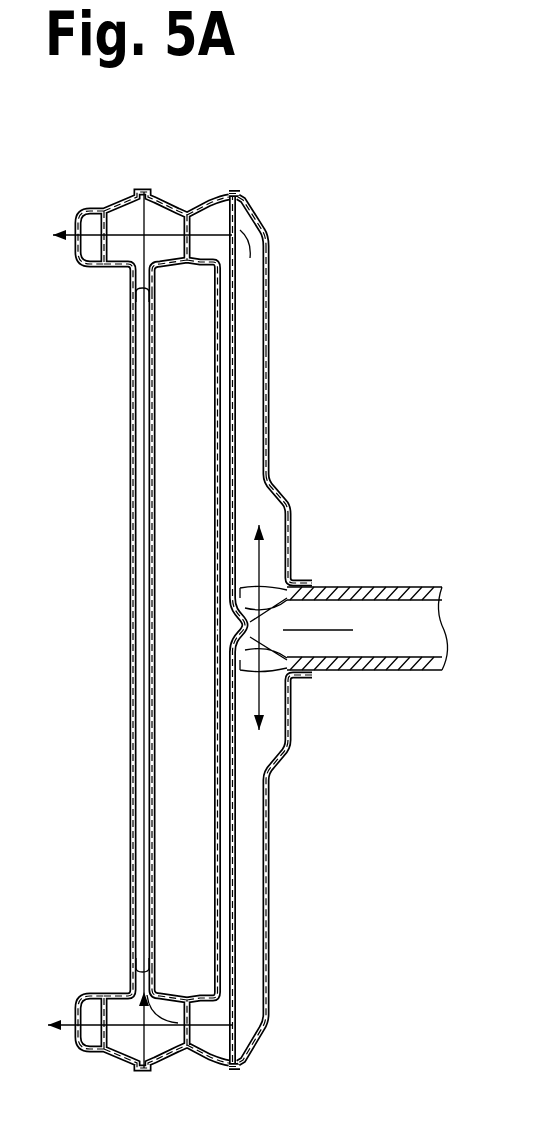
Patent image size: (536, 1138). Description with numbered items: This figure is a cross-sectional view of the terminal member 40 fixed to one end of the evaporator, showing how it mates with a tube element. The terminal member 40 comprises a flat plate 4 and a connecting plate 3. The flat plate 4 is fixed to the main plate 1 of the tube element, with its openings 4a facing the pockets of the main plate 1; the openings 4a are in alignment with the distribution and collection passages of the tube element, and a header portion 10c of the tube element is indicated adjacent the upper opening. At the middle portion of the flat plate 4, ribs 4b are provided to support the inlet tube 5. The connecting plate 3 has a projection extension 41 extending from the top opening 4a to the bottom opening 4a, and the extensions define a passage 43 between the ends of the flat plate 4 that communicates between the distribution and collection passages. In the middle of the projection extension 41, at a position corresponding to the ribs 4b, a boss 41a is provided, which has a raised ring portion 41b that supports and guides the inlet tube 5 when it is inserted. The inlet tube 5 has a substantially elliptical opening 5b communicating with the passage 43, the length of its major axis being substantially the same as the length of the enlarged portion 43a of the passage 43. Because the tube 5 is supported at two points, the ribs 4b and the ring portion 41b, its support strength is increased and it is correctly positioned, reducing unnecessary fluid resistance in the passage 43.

The main plate 1 is at (215, 318).
The header tank 10c is at (212, 190).
The connecting plate 3 is at (278, 816).
The flat plate 4 is at (236, 305).
The openings 4a is at (230, 240).
The ribs 4b is at (247, 620).
The terminal member 40 is at (286, 237).
The projection extension 41 is at (270, 340).
The boss 41a is at (283, 490).
The raised ring portion 41b is at (305, 578).
The passage 43 is at (250, 390).
The enlarged portion 43a is at (290, 520).
The inlet tube 5 is at (398, 585).
The opening 5b is at (292, 698).